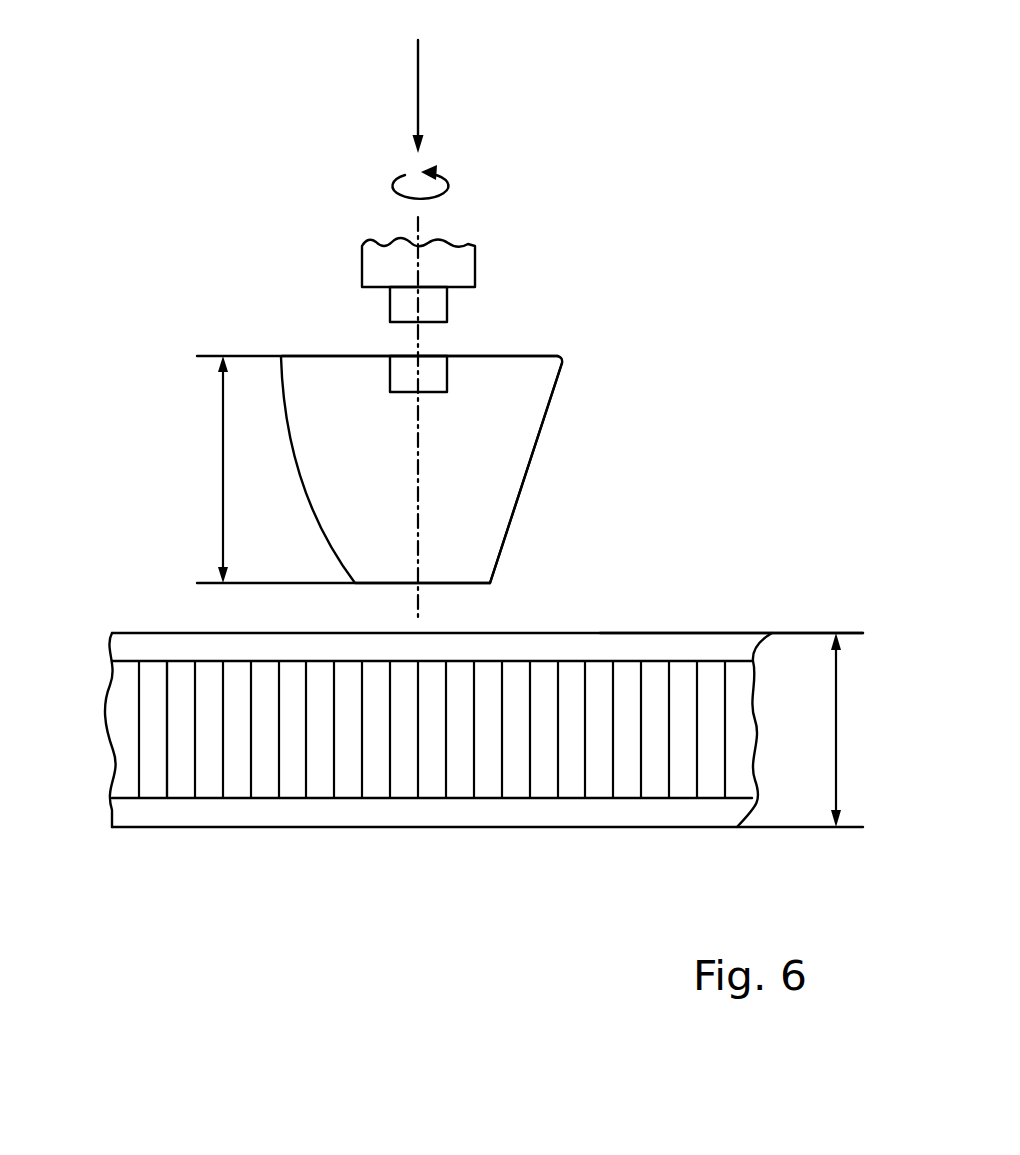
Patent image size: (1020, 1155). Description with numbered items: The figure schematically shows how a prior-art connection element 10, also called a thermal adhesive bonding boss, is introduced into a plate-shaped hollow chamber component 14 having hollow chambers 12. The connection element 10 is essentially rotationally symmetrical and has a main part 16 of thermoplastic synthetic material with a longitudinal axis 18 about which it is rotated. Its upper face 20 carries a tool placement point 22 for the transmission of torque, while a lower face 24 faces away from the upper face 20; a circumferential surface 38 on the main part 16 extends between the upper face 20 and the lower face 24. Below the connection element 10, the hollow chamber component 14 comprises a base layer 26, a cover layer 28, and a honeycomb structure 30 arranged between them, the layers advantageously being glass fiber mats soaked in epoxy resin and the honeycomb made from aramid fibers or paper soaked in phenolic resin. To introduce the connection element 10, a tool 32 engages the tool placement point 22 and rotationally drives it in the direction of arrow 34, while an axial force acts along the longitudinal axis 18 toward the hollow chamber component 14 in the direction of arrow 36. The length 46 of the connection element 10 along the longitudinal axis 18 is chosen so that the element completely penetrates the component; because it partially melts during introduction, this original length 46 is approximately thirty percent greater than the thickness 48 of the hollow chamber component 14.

The connection element 10 is at (497, 465).
The hollow chambers 12 is at (183, 687).
The hollow chamber component 14 is at (710, 633).
The main part 16 is at (494, 469).
The longitudinal axis 18 is at (418, 422).
The upper face 20 is at (537, 356).
The tool placement point 22 is at (450, 370).
The lower face 24 is at (467, 583).
The base layer 26 is at (283, 813).
The cover layer 28 is at (607, 647).
The honeycomb structure 30 is at (168, 710).
The tool 32 is at (458, 265).
The arrow 34 is at (447, 183).
The arrow 36 is at (420, 73).
The circumferential surface 38 is at (555, 413).
The length 46 is at (222, 418).
The thickness 48 is at (836, 700).